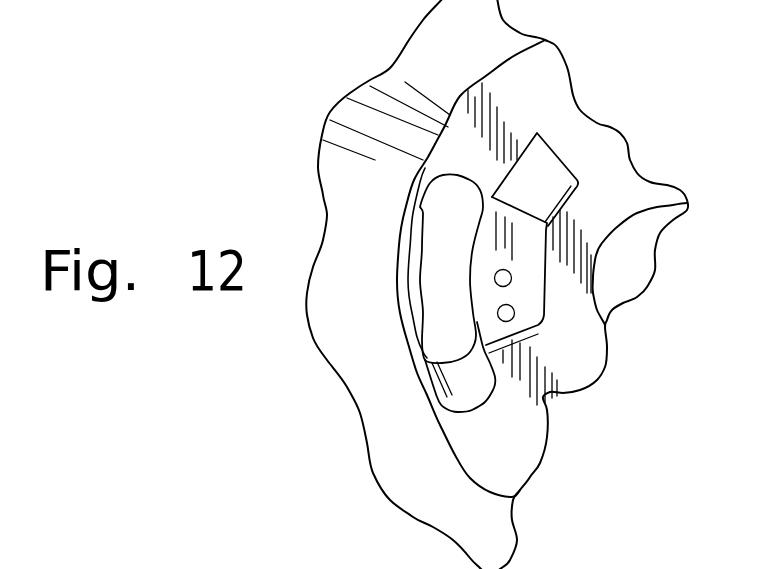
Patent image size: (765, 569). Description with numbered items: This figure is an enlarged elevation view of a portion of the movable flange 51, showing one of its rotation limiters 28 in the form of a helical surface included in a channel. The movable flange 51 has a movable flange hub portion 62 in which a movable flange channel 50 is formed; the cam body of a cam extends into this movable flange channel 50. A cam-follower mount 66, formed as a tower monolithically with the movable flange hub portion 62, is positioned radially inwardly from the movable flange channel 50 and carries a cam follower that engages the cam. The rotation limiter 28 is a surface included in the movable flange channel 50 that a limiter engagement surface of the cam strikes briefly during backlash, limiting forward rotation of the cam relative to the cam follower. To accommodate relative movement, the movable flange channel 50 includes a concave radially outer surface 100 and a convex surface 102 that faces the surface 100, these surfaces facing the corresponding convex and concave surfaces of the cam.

The movable flange 51 is at (540, 97).
The movable flange hub portion 62 is at (607, 132).
The cam-follower mount 66 is at (506, 180).
The concave radially outer surface 100 is at (410, 258).
The convex radially outer surface 102 is at (471, 271).
The movable flange channel 50 is at (470, 378).
The rotation limiter 28 is at (470, 397).